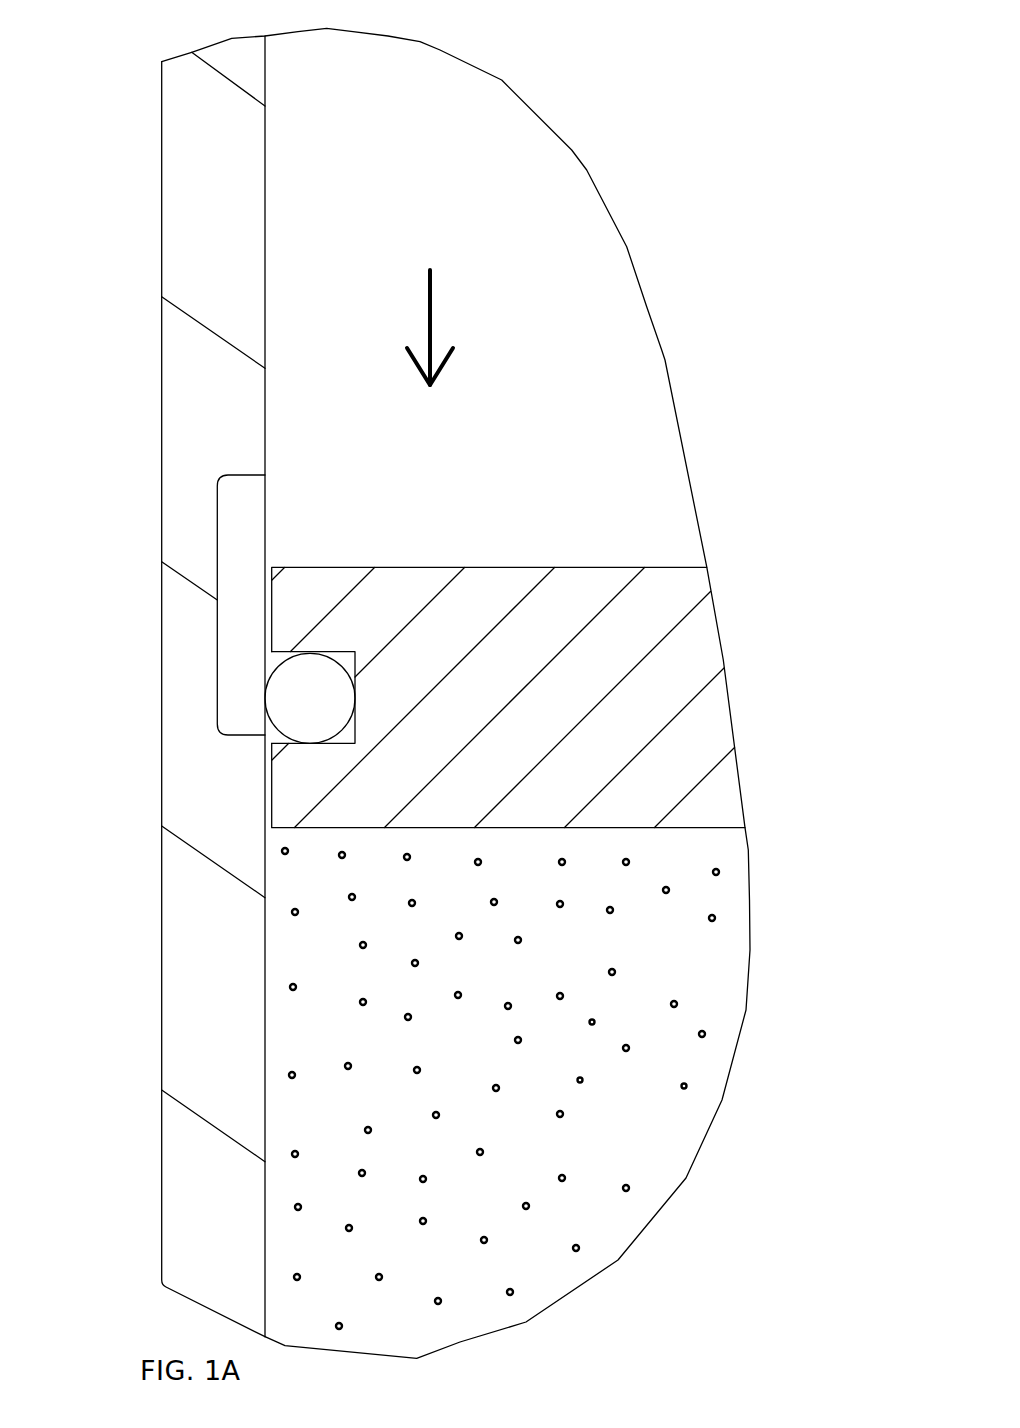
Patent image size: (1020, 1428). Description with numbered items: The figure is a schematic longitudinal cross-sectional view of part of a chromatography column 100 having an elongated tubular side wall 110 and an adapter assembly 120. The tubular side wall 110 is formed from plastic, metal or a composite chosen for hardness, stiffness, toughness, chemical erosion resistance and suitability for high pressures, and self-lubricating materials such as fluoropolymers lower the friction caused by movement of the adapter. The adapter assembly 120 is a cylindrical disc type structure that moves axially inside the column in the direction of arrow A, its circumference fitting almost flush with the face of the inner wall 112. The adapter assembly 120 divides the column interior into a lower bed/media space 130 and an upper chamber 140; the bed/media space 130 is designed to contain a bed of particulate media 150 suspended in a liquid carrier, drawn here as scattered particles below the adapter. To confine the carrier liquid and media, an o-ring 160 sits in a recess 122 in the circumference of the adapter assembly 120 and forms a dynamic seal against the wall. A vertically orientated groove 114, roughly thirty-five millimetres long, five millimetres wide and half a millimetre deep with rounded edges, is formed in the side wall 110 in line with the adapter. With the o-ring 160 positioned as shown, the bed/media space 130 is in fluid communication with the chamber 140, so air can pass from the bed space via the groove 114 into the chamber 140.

The chromatography column 100 is at (459, 693).
The tubular side wall 110 is at (153, 694).
The inner wall 112 is at (316, 686).
The groove 114 is at (153, 605).
The adapter assembly 120 is at (547, 697).
The recess 122 is at (348, 598).
The bed/media space 130 is at (564, 1088).
The chamber 140 is at (587, 321).
The particulate media 150 is at (411, 1018).
The o-ring 160 is at (201, 699).